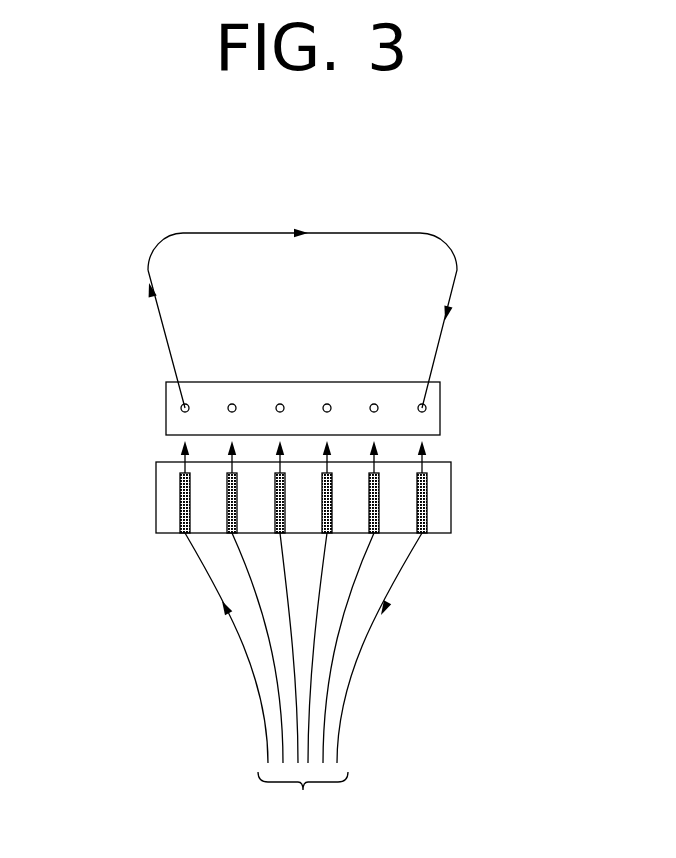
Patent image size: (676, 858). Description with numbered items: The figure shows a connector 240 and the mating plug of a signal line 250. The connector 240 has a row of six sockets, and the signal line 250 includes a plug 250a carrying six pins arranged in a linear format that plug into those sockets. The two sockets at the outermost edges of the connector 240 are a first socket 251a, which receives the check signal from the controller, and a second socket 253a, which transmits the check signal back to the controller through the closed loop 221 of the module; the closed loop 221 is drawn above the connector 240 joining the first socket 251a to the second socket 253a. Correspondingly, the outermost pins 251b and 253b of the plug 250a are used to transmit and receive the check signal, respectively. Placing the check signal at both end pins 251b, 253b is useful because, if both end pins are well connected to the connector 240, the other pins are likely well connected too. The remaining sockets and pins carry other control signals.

The closed loop 221 is at (235, 232).
The connector 240 is at (387, 381).
The first socket 251a is at (187, 403).
The second socket 253a is at (427, 408).
The plug 250a is at (156, 513).
The outermost pin 251b is at (180, 480).
The outermost pin 253b is at (427, 483).
The signal line 250 is at (303, 677).